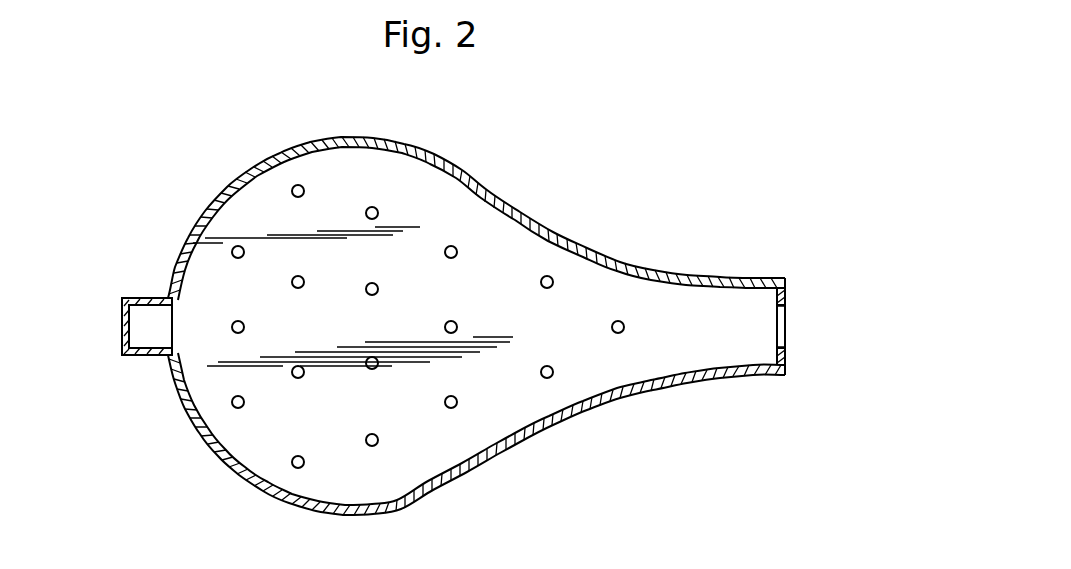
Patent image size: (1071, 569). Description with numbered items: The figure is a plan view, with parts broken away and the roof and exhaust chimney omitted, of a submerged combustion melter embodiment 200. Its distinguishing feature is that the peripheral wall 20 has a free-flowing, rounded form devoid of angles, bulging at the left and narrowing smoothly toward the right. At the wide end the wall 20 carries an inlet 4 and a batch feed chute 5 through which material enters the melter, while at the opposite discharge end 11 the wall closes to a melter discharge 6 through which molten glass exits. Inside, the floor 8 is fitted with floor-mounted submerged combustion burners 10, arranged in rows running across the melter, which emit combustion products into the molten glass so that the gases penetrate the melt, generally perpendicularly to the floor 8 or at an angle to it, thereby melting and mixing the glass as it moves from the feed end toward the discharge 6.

The melter embodiment 200 is at (475, 335).
The wall 20 is at (478, 183).
The submerged combustion burners 10 is at (297, 462).
The floor 8 is at (503, 400).
The batch feed chute 5 is at (142, 298).
The inlet 4 is at (167, 327).
The melter discharge 6 is at (788, 315).
The discharge end 11 is at (788, 358).